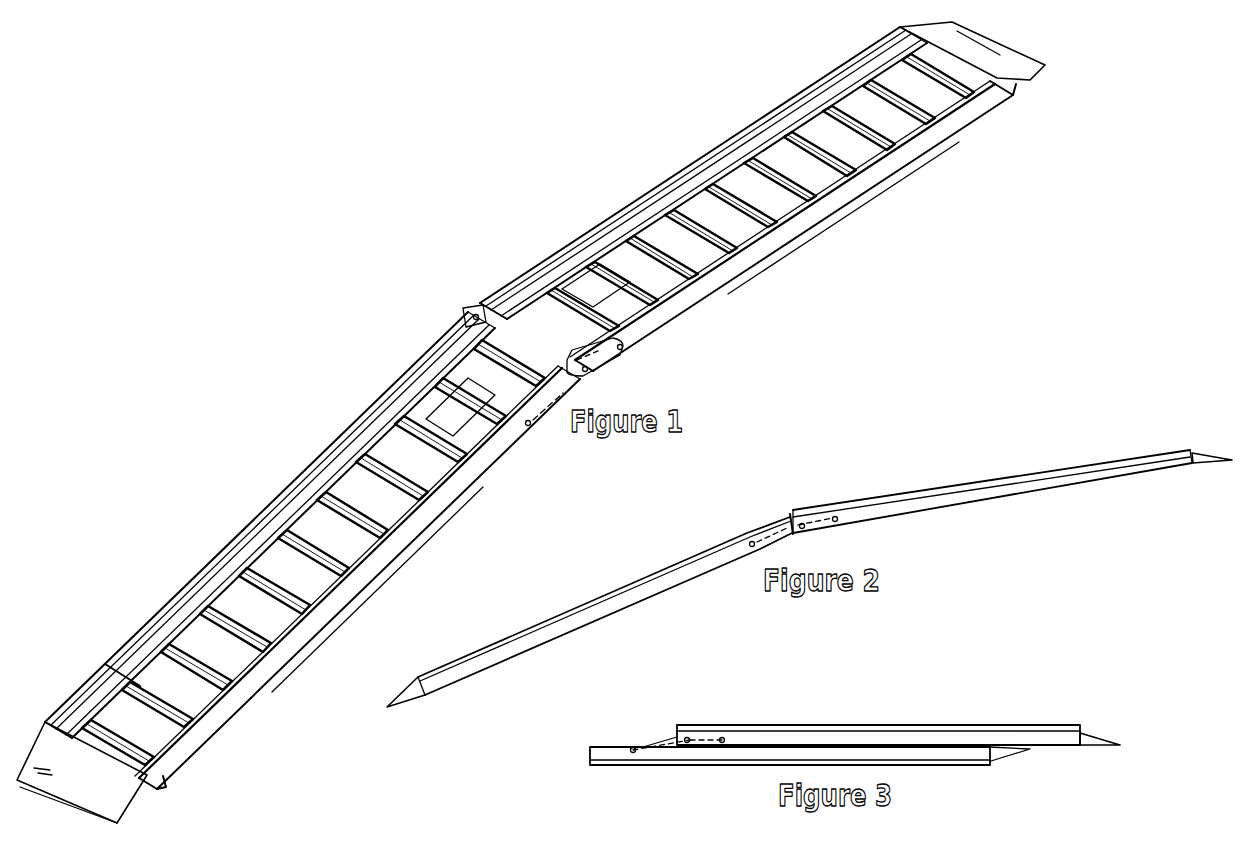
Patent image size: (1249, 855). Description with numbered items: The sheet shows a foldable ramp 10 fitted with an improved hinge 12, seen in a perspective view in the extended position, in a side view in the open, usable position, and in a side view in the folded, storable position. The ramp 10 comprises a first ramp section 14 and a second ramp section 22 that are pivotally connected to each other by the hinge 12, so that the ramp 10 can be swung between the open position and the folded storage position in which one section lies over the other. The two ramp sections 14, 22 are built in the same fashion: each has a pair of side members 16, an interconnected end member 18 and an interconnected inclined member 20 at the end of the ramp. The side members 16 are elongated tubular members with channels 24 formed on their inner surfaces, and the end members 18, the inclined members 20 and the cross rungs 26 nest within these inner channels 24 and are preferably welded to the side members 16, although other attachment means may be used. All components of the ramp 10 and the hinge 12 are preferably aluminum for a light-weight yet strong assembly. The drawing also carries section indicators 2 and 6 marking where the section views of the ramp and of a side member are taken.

In FIG. 1, the section line 2- 2 is at (632, 455).
In FIG. 1, the section line 6- 6 is at (392, 398).
In FIG. 1, the foldable ramp 10 is at (814, 270).
In FIG. 1, the hinge 12 is at (611, 383).
In FIG. 1, the first ramp section 14 is at (303, 440).
In FIG. 2, the first ramp section 14 is at (605, 628).
In FIG. 3, the first ramp section 14 is at (953, 768).
In FIG. 1, the side members 16 is at (270, 493).
In FIG. 1, the end member 18 is at (462, 316).
In FIG. 1, the inclined member 20 is at (100, 790).
In FIG. 2, the inclined member 20 is at (1207, 458).
In FIG. 3, the inclined member 20 is at (1100, 742).
In FIG. 1, the second ramp section 22 is at (897, 200).
In FIG. 2, the second ramp section 22 is at (993, 515).
In FIG. 3, the second ramp section 22 is at (890, 715).
In FIG. 1, the channels 24 is at (180, 612).
In FIG. 1, the rungs 26 is at (120, 686).